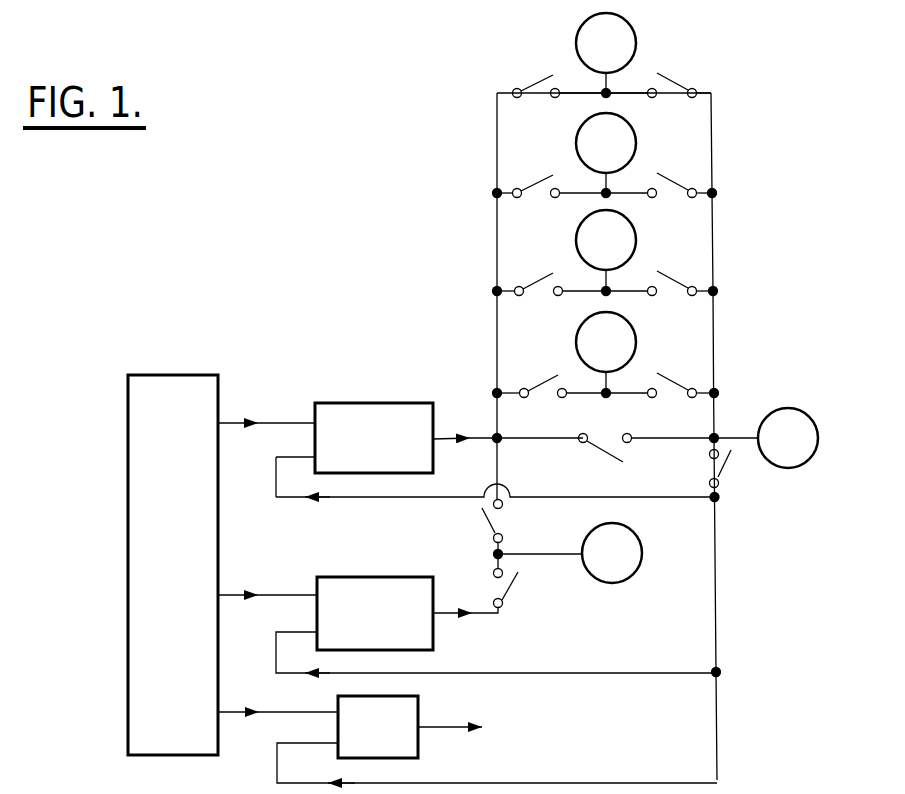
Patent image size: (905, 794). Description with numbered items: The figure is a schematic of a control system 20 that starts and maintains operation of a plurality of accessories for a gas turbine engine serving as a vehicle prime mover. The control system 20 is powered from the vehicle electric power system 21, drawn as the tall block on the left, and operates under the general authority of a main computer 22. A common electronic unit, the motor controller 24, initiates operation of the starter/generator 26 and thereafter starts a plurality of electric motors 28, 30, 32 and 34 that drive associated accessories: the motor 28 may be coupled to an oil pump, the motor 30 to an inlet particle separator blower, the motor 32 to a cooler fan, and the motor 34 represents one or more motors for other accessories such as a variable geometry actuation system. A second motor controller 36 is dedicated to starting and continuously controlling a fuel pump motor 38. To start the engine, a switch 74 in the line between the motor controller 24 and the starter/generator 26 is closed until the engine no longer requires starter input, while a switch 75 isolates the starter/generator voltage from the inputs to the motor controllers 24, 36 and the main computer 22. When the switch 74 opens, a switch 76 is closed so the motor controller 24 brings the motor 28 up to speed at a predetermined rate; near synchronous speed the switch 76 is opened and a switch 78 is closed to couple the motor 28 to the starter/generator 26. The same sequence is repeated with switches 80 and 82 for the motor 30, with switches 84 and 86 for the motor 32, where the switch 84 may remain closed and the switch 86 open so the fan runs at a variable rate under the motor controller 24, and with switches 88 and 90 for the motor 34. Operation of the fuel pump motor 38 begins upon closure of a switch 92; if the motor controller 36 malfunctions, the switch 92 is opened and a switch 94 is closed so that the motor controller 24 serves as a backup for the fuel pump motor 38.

The control system 20 is at (736, 673).
The electric power system 21 is at (182, 551).
The main computer 22 is at (392, 740).
The motor controller 24 is at (384, 445).
The starter/generator 26 is at (793, 406).
The electric motor 28 is at (637, 328).
The electric motor 30 is at (637, 233).
The electric motor 32 is at (637, 137).
The electric motor 34 is at (633, 28).
The second motor controller 36 is at (387, 627).
The fuel pump motor 38 is at (636, 574).
The switch 74 is at (622, 448).
The switch 75 is at (728, 472).
The switch 76 is at (545, 375).
The switch 78 is at (682, 375).
The switch 80 is at (535, 275).
The switch 82 is at (682, 274).
The switch 84 is at (537, 177).
The switch 86 is at (688, 186).
The switch 88 is at (543, 77).
The switch 90 is at (675, 77).
The switch 92 is at (519, 583).
The switch 94 is at (481, 519).